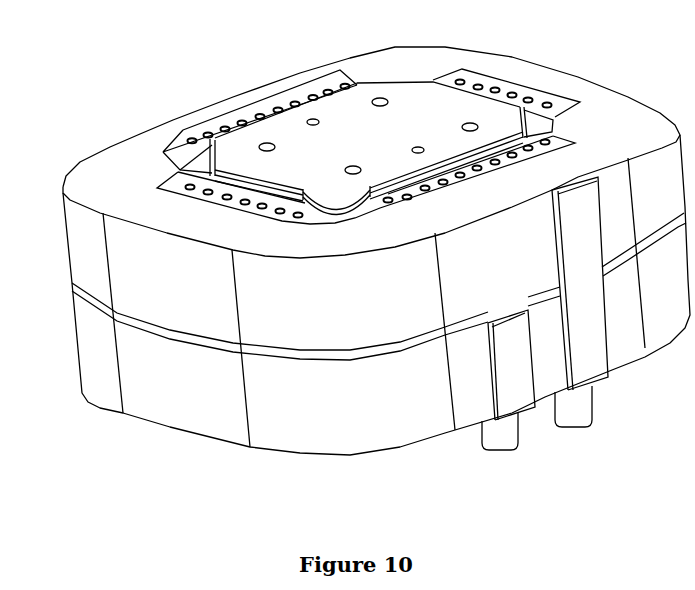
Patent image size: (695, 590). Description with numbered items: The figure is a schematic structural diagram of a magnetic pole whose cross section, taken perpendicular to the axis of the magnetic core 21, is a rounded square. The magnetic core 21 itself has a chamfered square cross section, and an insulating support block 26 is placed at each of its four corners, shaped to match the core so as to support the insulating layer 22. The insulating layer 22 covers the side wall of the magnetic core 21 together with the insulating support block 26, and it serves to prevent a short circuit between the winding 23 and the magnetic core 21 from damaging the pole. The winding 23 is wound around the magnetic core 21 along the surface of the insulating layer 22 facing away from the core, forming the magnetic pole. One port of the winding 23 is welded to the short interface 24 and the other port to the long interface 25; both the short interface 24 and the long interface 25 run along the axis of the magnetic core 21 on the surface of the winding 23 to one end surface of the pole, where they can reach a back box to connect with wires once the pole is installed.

The magnetic core 21 is at (340, 122).
The insulating layer 22 is at (218, 148).
The winding 23 is at (120, 175).
The short interface 24 is at (507, 373).
The long interface 25 is at (588, 350).
The insulating support block 26 is at (545, 127).